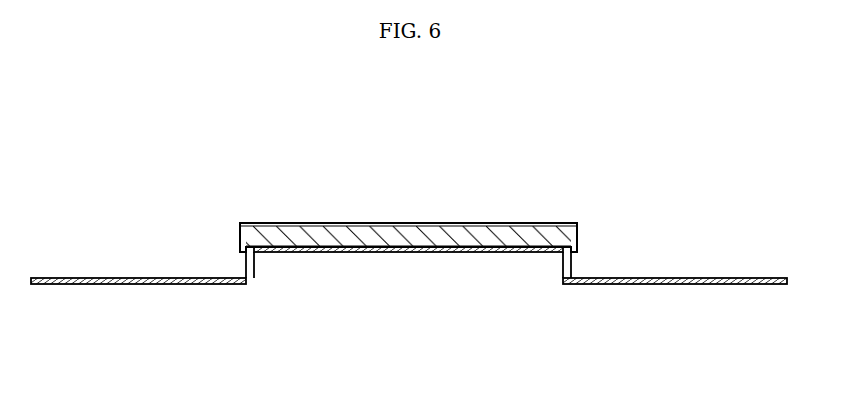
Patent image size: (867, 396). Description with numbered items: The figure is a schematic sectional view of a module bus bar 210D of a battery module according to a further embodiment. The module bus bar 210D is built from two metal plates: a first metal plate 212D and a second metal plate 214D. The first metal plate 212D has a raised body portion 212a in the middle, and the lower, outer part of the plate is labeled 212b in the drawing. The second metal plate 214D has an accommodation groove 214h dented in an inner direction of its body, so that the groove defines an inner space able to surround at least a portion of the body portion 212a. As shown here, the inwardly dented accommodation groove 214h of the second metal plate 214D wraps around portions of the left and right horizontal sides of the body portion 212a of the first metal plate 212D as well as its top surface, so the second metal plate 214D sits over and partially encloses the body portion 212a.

The module bus bar 210D is at (192, 140).
The first metal plate 212D is at (370, 328).
The body portion 212a is at (340, 252).
The frame flange portion 212b is at (168, 287).
The second metal plate 214D is at (339, 224).
The accommodation groove 214h is at (433, 247).